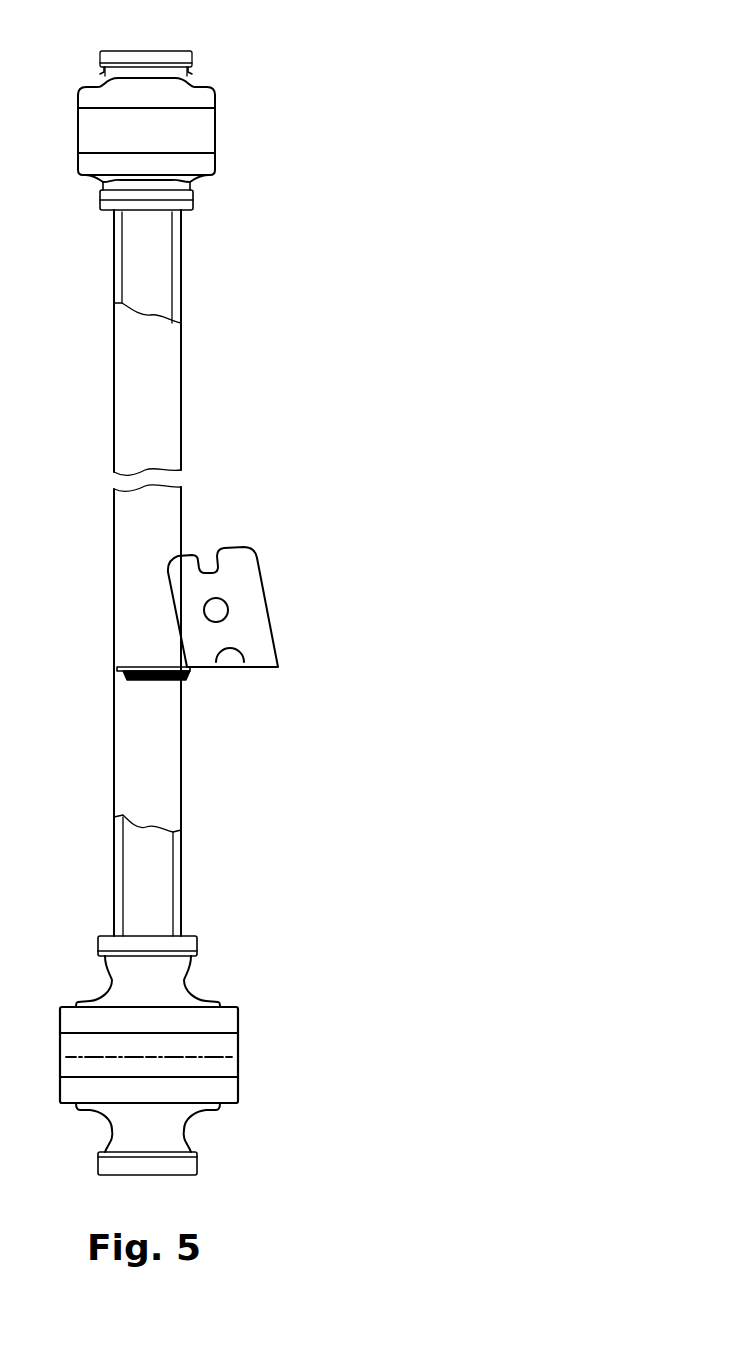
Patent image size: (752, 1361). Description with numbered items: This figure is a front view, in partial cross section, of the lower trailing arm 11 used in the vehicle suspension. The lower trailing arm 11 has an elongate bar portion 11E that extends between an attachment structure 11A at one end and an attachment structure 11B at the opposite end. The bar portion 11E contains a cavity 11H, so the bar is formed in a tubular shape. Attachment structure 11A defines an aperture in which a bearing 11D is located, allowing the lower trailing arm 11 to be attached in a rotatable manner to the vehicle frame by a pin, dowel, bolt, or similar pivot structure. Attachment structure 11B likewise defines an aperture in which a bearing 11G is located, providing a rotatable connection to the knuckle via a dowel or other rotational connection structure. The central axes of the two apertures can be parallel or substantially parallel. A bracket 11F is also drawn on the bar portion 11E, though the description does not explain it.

The lower trailing arm 11 is at (412, 282).
The attachment structure 11A is at (170, 990).
The attachment structure 11B is at (192, 51).
The bearing 11D is at (202, 1020).
The elongate bar portion 11E is at (165, 752).
The bracket 11F is at (242, 620).
The bearing 11G is at (202, 98).
The cavity 11H is at (145, 887).